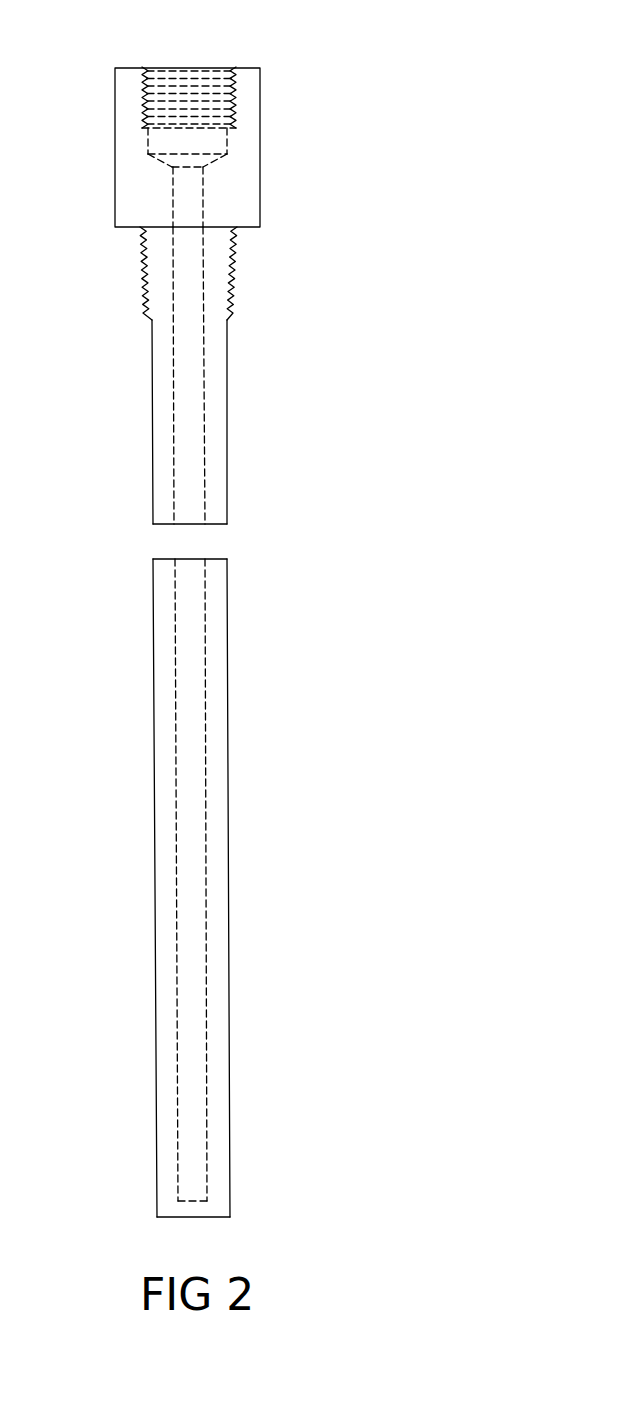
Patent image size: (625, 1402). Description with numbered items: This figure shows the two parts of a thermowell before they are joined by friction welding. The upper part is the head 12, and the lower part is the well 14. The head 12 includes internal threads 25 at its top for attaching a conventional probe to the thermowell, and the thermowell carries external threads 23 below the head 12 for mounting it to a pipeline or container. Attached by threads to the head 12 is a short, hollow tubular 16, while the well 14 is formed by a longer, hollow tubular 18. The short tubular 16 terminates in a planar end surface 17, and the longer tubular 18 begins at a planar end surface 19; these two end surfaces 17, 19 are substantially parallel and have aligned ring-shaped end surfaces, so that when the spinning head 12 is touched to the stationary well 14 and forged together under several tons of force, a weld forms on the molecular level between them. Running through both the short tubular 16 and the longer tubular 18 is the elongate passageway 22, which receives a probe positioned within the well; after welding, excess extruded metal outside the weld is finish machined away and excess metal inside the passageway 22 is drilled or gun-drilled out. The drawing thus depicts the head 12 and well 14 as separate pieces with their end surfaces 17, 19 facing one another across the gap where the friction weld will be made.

The head 12 is at (122, 167).
The internal threads 25 is at (155, 83).
The external threads 23 is at (142, 267).
The short hollow tubular 16 is at (152, 412).
The planar end surface 17 is at (170, 525).
The planar end surface 19 is at (195, 558).
The longer hollow tubular 18 is at (183, 922).
The passageway 22 is at (192, 1005).
The well 14 is at (172, 1198).